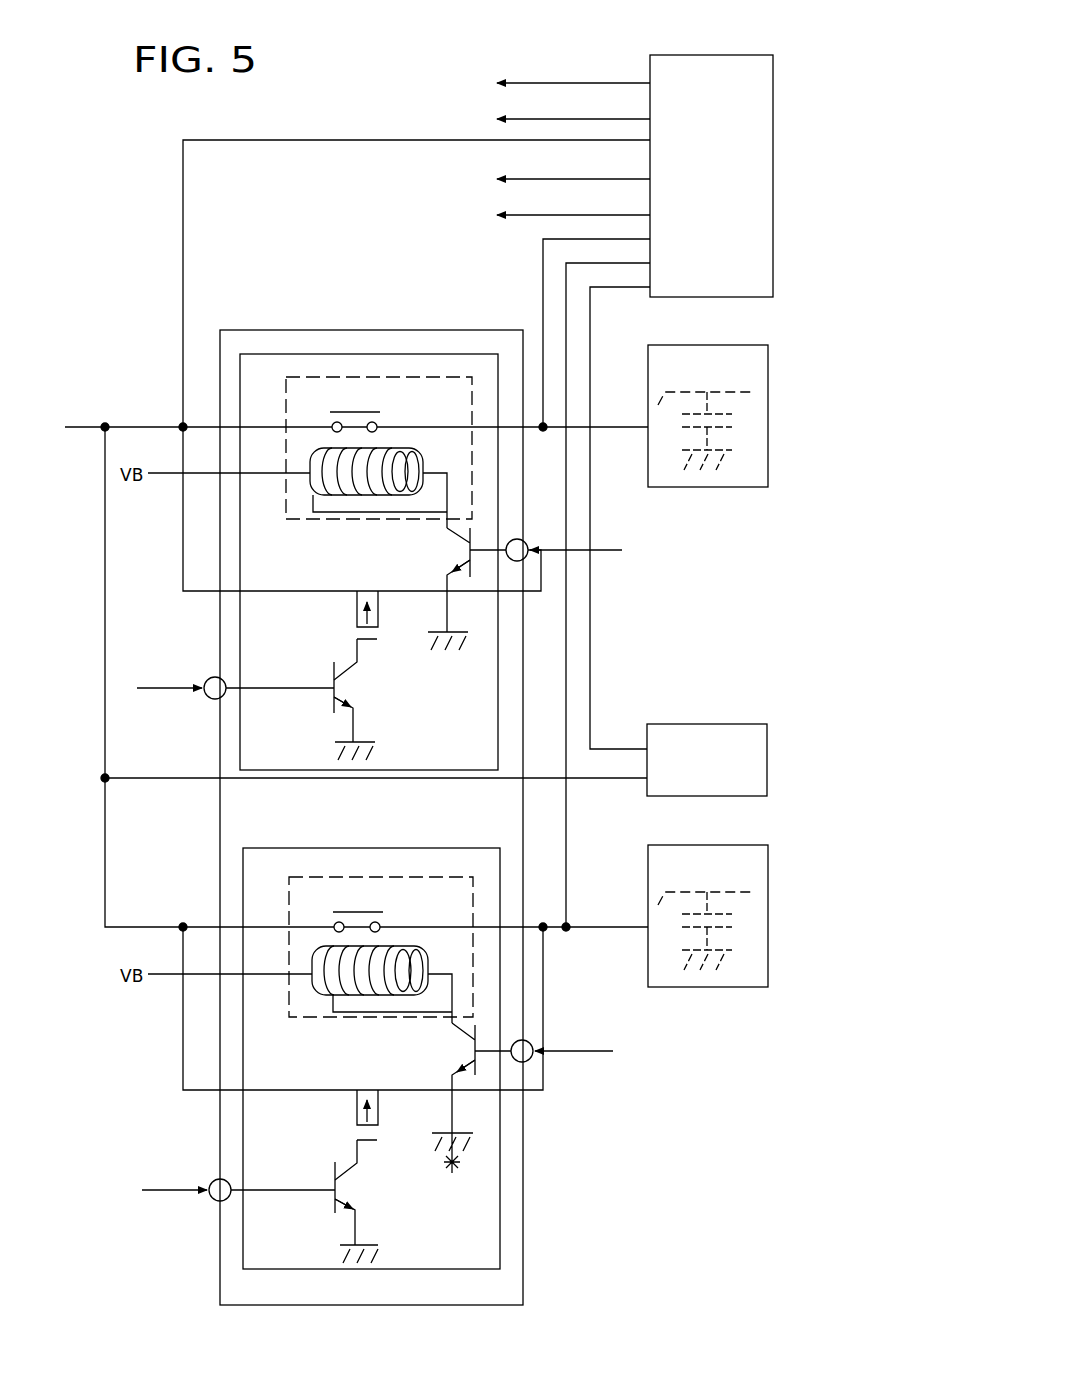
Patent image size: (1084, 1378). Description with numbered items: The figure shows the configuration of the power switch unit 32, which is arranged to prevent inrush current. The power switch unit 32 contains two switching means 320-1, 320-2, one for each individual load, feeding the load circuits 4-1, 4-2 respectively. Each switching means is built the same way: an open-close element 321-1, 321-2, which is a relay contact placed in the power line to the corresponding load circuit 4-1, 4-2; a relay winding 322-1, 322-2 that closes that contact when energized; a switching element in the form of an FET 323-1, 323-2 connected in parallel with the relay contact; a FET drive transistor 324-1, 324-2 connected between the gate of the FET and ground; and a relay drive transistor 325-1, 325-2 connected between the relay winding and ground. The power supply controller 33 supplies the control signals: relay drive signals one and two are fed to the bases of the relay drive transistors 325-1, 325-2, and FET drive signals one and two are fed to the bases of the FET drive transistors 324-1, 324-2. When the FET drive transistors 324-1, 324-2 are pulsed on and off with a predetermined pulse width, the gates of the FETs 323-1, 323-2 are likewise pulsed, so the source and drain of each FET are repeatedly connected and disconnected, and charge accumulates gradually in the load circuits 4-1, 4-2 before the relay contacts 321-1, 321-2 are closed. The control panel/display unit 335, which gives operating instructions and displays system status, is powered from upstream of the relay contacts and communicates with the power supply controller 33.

The power supply controller 33 is at (702, 52).
The load circuit 4-1 is at (728, 488).
The load circuit 4-2 is at (728, 988).
The control panel/display unit 335 is at (700, 722).
The power switch unit 32 is at (523, 1160).
The switching means 320-1 is at (240, 642).
The switching means 320-2 is at (243, 1232).
The open-close element 321-1 is at (360, 402).
The open-close element 321-2 is at (417, 897).
The relay winding 322-1 is at (323, 522).
The relay winding 322-2 is at (333, 1022).
The switching element (FET) 323-1 is at (355, 613).
The switching element (FET) 323-2 is at (357, 1109).
The FET drive transistor 324-1 is at (345, 690).
The FET drive transistor 324-2 is at (360, 1190).
The relay drive transistor 325-1 is at (460, 552).
The relay drive transistor 325-2 is at (462, 1052).